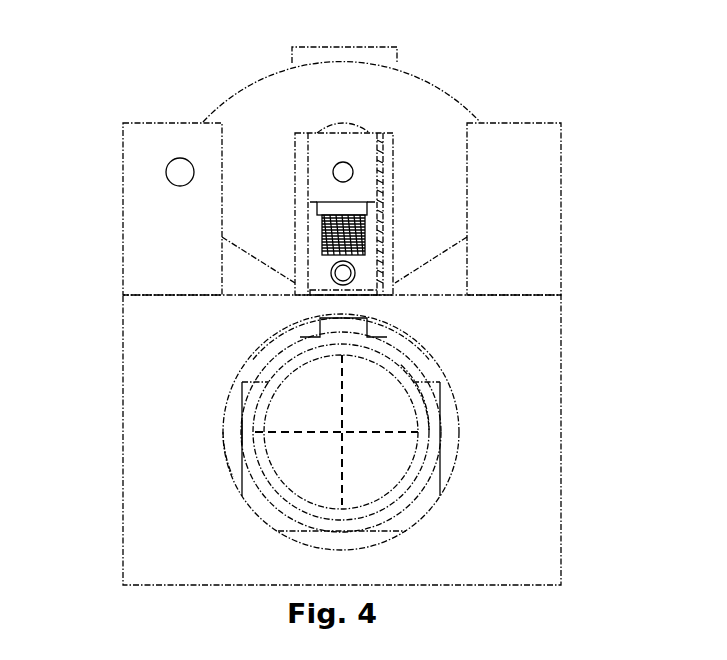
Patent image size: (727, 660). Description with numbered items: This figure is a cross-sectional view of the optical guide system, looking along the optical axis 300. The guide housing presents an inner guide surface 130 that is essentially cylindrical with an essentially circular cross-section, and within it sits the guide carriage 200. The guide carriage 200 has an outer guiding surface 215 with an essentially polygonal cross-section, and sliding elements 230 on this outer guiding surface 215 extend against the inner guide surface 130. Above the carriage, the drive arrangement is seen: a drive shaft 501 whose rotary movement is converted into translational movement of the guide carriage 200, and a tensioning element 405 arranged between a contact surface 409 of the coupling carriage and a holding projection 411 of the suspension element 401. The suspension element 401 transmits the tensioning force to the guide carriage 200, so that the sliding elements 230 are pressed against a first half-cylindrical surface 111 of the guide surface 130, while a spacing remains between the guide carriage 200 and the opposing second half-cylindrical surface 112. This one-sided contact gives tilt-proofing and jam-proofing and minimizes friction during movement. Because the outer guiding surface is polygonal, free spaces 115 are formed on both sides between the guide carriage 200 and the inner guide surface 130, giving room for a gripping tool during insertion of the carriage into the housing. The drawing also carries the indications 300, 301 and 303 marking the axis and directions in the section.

The drive shaft 501 is at (333, 172).
The contact surface 409 is at (306, 254).
The holding projection 411 is at (363, 210).
The tensioning element 405 is at (340, 230).
The suspension element 401 is at (350, 318).
The sliding element 230 is at (425, 344).
The first half-cylindrical surface 111 is at (226, 405).
The free spaces 115 is at (230, 418).
The outer guiding surface 215 is at (241, 432).
The second half-cylindrical surface 112 is at (222, 447).
The inner guide surface 130 is at (453, 387).
The guide carriage 200 is at (452, 448).
The rotation direction 303 is at (409, 432).
The optical axis 300 is at (332, 432).
The bore 301 is at (343, 476).